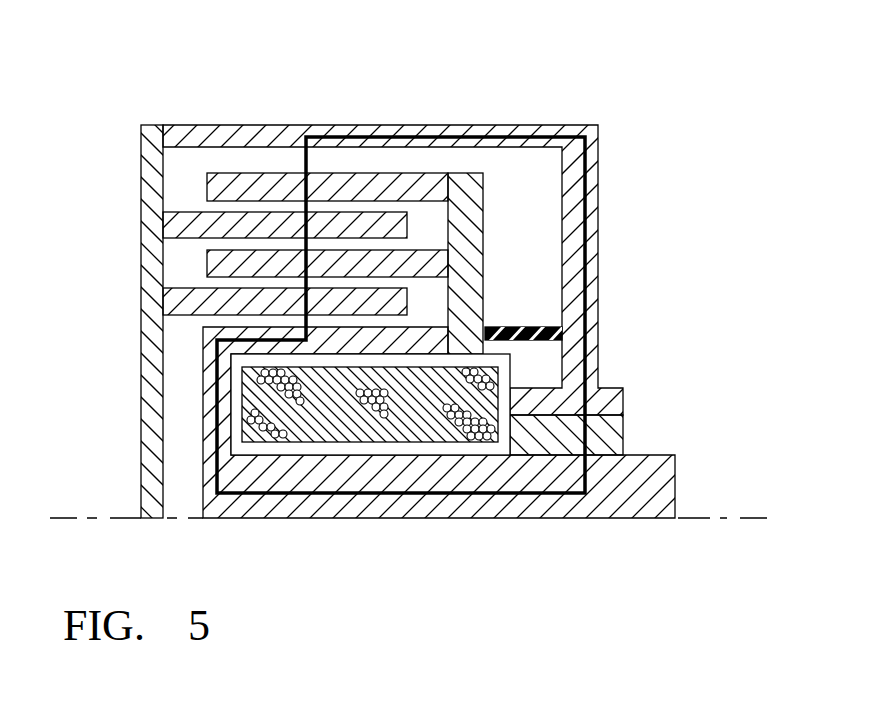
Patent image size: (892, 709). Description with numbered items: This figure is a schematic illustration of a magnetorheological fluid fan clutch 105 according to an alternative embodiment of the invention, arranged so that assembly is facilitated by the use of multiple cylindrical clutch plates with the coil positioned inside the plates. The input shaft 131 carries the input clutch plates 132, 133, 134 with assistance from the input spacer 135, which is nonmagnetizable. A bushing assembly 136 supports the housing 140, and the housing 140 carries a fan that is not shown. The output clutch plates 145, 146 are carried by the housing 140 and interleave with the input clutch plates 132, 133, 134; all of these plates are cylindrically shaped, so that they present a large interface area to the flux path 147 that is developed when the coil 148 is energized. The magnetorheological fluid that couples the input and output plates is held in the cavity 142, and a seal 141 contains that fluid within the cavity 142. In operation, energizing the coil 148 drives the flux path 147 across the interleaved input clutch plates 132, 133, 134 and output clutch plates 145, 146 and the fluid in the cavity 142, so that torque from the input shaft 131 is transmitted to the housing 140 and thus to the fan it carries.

The assembly 105 is at (655, 170).
The housing 140 is at (598, 167).
The cavity 142 is at (510, 175).
The output clutch plate 146 is at (190, 211).
The output clutch plate 145 is at (190, 288).
The input clutch plate 134 is at (370, 173).
The input spacer 135 is at (483, 237).
The input clutch plate 133 is at (417, 248).
The input clutch plate 132 is at (417, 327).
The input shaft 131 is at (667, 453).
The bushing assembly 136 is at (623, 430).
The seal 141 is at (562, 335).
The coil 148 is at (247, 427).
The flux path 147 is at (387, 493).